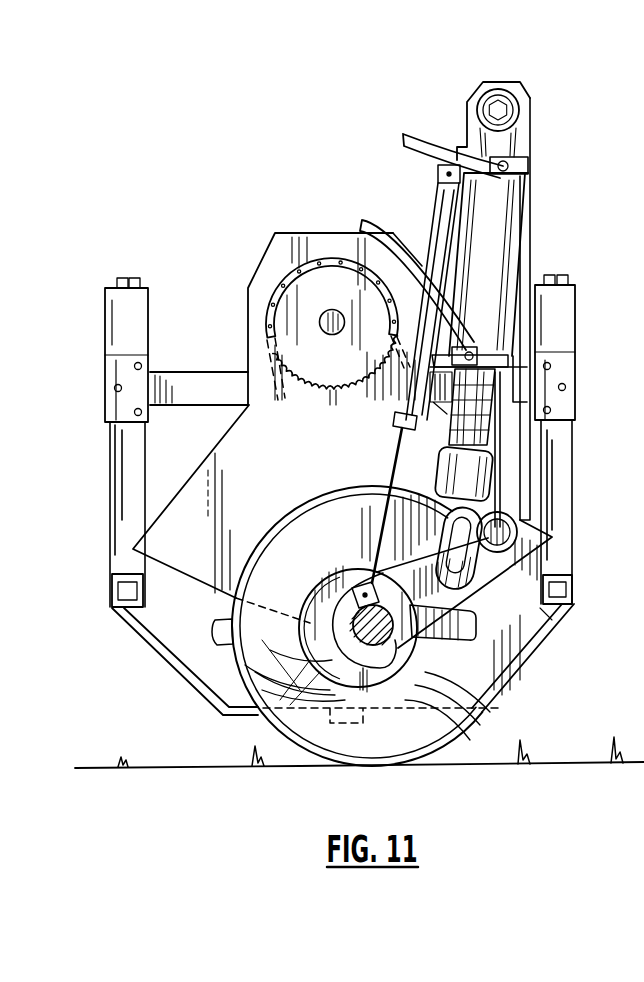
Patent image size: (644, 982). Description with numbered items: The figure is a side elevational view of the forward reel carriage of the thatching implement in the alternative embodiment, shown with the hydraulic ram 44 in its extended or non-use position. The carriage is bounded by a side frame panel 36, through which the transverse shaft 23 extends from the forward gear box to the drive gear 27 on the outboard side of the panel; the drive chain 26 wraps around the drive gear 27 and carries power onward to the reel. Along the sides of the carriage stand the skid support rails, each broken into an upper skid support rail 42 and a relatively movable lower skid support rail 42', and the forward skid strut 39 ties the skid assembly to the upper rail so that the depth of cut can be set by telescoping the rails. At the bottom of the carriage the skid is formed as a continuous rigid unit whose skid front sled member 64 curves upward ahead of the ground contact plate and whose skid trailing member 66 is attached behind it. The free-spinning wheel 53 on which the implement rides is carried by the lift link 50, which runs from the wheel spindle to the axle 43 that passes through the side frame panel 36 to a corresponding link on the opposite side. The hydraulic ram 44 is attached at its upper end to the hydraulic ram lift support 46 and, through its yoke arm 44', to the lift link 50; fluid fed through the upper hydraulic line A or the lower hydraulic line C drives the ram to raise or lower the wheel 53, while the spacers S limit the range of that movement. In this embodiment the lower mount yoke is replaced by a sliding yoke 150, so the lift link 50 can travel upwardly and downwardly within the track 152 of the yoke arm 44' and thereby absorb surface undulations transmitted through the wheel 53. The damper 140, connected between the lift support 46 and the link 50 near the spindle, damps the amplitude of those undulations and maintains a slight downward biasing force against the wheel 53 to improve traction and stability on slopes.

The transverse shaft 23 is at (335, 310).
The drive chain 26 is at (249, 289).
The drive gear 27 is at (300, 292).
The side frame panel 36 is at (131, 549).
The forward skid strut 39 is at (212, 384).
The upper skid support rail 42 is at (349, 373).
The lower skid support rail 42' is at (311, 513).
The axle 43 is at (503, 546).
The hydraulic ram 44 is at (509, 270).
The yoke arm 44' is at (528, 519).
The hydraulic ram lift support 46 is at (500, 111).
The lift link 50 is at (368, 582).
The wheel 53 is at (382, 747).
The skid front sled member 64 is at (517, 662).
The skid trailing member 66 is at (188, 680).
The damper 140 is at (440, 198).
The sliding yoke 150 is at (428, 482).
The track 152 is at (498, 534).
The upper hydraulic line A is at (424, 138).
The lower hydraulic line C is at (368, 222).
The spacers S is at (575, 456).